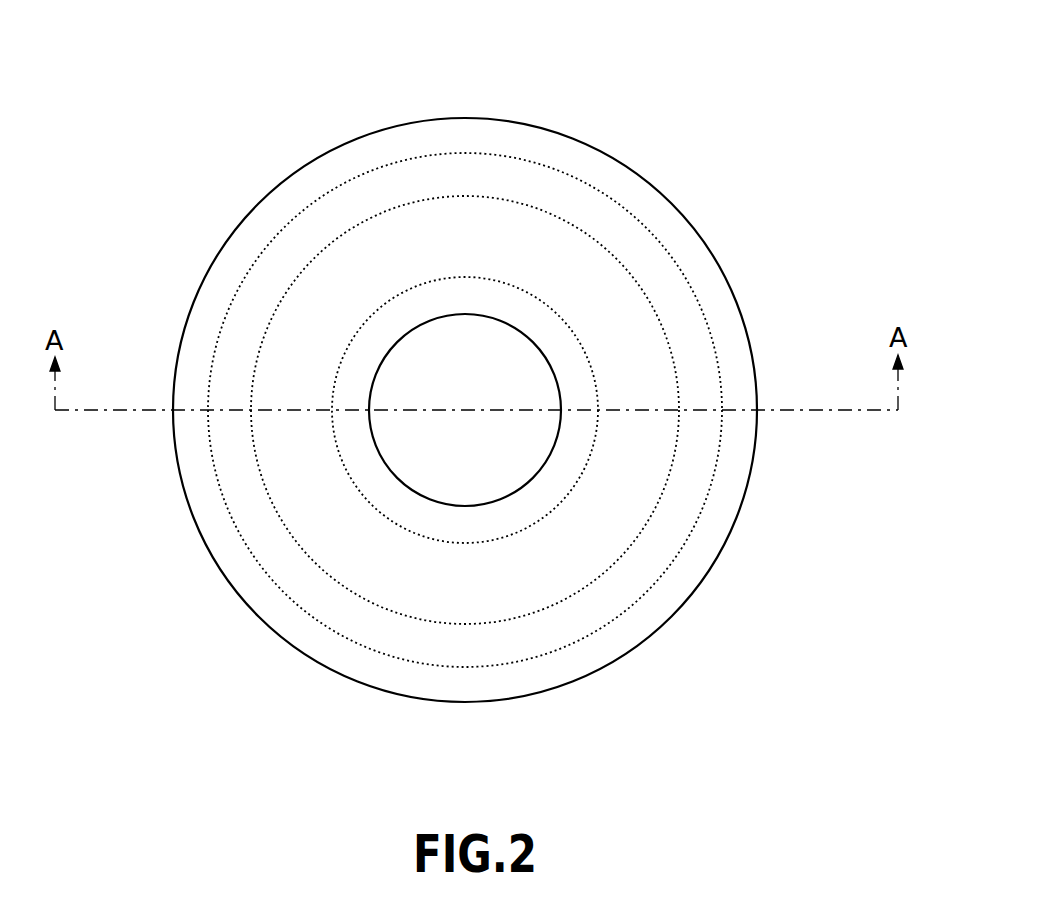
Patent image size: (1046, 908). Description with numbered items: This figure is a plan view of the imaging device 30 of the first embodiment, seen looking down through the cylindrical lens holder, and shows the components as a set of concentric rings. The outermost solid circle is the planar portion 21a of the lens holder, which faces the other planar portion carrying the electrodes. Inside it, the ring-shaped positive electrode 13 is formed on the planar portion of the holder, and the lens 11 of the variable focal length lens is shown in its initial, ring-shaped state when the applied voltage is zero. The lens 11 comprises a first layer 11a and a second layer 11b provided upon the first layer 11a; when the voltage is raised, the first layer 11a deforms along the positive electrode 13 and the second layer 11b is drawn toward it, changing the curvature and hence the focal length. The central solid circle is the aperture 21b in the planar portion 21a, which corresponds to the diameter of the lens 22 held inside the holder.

The piezoelectric vibrator 30 is at (778, 128).
The lens 11 is at (767, 160).
The first layer 11a is at (667, 330).
The second layer 11b is at (577, 323).
The positive electrode 13 is at (730, 358).
The planar portion 21a is at (492, 142).
The aperture 21b is at (503, 322).
The lens 22 is at (518, 368).